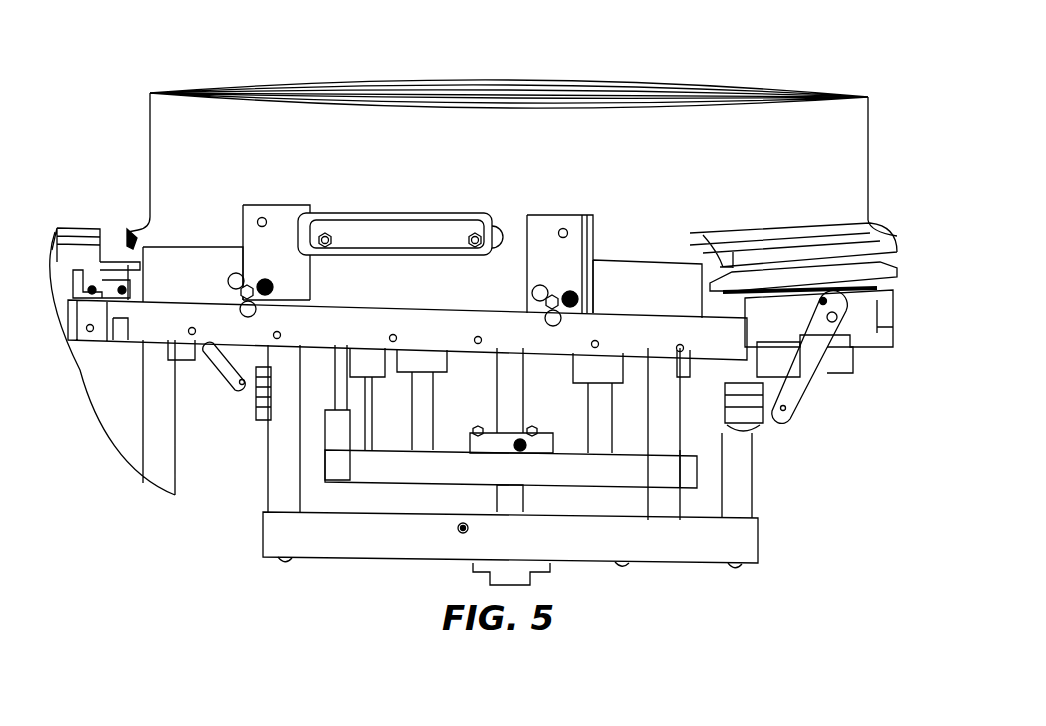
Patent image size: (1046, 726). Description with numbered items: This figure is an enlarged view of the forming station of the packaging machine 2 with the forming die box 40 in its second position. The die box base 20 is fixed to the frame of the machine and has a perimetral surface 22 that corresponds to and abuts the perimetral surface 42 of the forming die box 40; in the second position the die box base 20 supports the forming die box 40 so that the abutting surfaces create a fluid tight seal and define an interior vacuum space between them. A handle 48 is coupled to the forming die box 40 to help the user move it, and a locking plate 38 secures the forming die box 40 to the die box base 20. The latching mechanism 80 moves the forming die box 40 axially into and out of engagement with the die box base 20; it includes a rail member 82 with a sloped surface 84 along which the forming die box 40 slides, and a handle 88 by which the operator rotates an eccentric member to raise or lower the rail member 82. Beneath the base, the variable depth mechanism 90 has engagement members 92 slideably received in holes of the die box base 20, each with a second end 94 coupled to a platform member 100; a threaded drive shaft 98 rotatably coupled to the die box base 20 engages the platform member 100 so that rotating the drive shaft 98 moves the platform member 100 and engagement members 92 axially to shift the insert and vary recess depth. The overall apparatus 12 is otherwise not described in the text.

The packaging machine 2 is at (843, 44).
The fixture assembly 12 is at (116, 53).
The die box base 20 is at (200, 275).
The perimetral surface 22 is at (145, 248).
The locking plate 38 is at (542, 233).
The forming die box 40 is at (530, 125).
The perimetral surface 42 is at (148, 250).
The handle 48 is at (383, 233).
The latching mechanism 80 is at (62, 367).
The rail member 82 is at (80, 250).
The sloped surface 84 is at (128, 232).
The handle 88 is at (230, 360).
The variable depth mechanism 90 is at (220, 525).
The engagement member 92 is at (345, 405).
The second end 94 is at (380, 435).
The drive shaft 98 is at (517, 495).
The platform member 100 is at (422, 468).